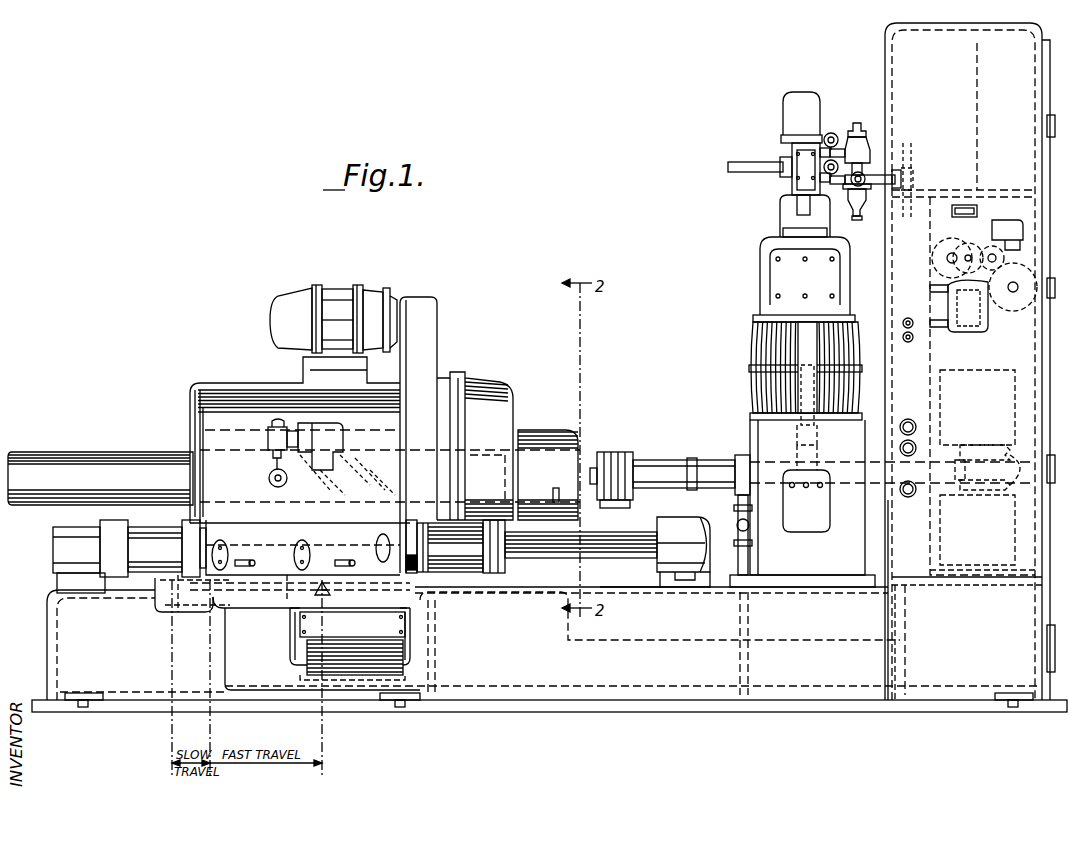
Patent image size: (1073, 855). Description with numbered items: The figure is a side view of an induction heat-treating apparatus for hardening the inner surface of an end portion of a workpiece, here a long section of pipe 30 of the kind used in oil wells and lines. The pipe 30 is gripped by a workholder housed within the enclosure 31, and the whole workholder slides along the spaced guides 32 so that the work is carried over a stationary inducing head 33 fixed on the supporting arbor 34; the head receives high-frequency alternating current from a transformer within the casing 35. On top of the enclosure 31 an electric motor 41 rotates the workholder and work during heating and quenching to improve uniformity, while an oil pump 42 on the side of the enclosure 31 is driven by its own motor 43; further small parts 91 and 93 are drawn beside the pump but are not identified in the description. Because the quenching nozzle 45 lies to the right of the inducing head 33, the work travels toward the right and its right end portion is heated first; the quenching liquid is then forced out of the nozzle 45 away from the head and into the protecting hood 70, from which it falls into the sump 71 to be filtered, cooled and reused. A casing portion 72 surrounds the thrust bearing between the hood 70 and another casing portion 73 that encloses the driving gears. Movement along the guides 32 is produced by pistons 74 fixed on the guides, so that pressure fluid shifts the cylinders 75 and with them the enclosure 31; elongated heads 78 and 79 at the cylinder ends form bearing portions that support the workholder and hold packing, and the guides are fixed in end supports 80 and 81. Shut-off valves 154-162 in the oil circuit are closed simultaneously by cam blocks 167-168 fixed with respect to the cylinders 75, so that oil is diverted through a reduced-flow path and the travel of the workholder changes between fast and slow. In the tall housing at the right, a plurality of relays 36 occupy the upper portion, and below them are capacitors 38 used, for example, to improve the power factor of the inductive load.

The pipe 30 is at (115, 462).
The enclosure 31 is at (245, 392).
The spaced guides 32 is at (615, 535).
The inducing head 33 is at (626, 452).
The supporting arbor 34 is at (706, 464).
The casing 35 is at (752, 366).
The relays 36 is at (948, 122).
The capacitors 38 is at (1005, 465).
The electric motor 41 is at (330, 292).
The oil pump 42 is at (268, 436).
The motor 43 is at (330, 433).
The quenching nozzle 45 is at (620, 503).
The protecting hood 70 is at (550, 433).
The sump 71 is at (623, 596).
The casing portion 72 is at (485, 393).
The casing portion 73 is at (437, 318).
The pistons 74 is at (438, 573).
The cylinders 75 is at (196, 530).
The elongated head 78 is at (500, 574).
The elongated head 79 is at (150, 530).
The end support 80 is at (688, 525).
The end support 81 is at (53, 538).
The valve stem 91 is at (272, 423).
The valve knob 93 is at (268, 470).
The shut-off valves 154-162 is at (328, 618).
The cam blocks 167-168 is at (180, 613).